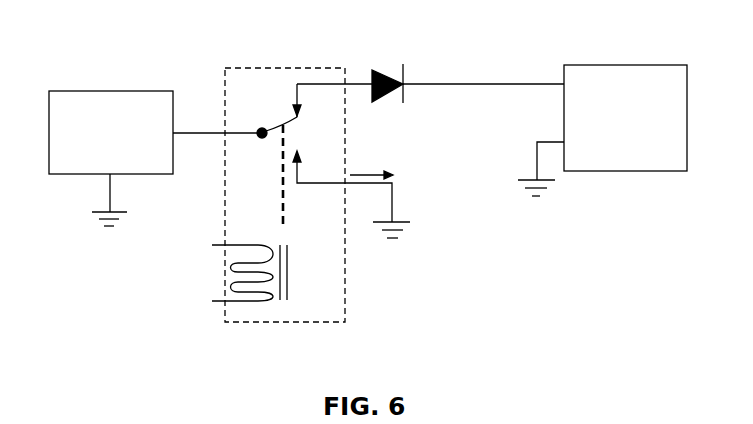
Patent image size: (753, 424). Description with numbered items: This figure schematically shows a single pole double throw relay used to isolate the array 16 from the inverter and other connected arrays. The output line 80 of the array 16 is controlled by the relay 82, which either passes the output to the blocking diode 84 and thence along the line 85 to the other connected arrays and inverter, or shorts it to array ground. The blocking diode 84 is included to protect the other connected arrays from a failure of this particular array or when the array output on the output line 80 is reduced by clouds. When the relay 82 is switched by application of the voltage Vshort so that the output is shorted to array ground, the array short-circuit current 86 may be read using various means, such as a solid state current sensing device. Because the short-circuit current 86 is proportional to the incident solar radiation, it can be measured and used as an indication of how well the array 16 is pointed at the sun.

The array 16 is at (100, 90).
The output line 80 is at (212, 132).
The relay 82 is at (297, 65).
The blocking diode 84 is at (388, 63).
The line to other connected arrays and inverter 85 is at (485, 80).
The array short-circuit current 86 is at (412, 170).